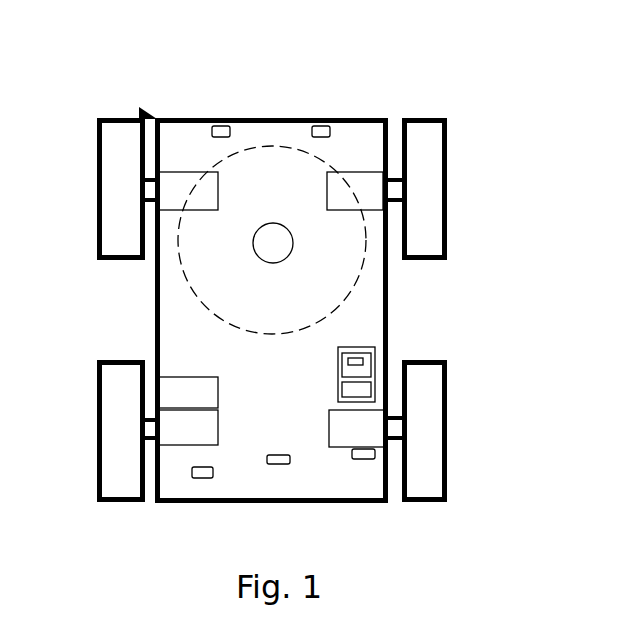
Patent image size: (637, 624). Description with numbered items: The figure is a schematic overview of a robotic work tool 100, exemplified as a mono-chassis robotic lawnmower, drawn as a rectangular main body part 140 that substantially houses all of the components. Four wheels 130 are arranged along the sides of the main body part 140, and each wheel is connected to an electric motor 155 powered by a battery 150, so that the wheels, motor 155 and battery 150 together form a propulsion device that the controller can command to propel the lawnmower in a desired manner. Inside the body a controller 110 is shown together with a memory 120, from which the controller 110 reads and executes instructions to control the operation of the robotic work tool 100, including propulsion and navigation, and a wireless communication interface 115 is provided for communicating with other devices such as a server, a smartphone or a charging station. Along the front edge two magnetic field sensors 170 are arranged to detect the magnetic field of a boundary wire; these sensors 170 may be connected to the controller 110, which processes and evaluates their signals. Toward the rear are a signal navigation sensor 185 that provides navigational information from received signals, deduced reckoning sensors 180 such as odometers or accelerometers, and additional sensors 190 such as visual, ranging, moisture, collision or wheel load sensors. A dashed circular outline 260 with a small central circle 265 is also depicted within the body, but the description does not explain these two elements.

The robotic work tool 100 is at (136, 108).
The controller 110 is at (375, 350).
The wireless communication interface 115 is at (363, 360).
The memory 120 is at (373, 376).
The wheels 130 is at (117, 118).
The main body part 140 is at (357, 118).
The battery 150 is at (271, 309).
The electric motor 155 is at (188, 392).
The magnetic field sensor 170 is at (211, 126).
The deduced reckoning sensors 180 is at (362, 461).
The signal navigation sensor 185 is at (280, 465).
The additional sensors 190 is at (202, 480).
The rotation range 260 is at (200, 302).
The rotation center 265 is at (262, 258).